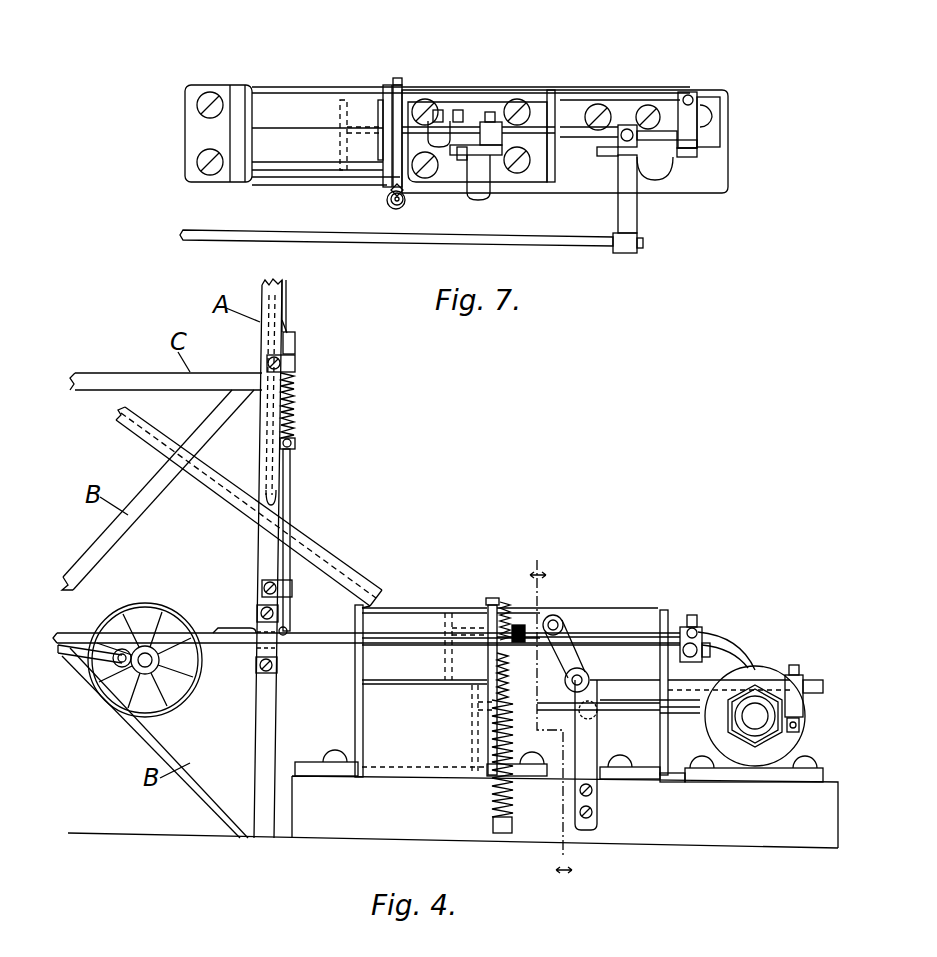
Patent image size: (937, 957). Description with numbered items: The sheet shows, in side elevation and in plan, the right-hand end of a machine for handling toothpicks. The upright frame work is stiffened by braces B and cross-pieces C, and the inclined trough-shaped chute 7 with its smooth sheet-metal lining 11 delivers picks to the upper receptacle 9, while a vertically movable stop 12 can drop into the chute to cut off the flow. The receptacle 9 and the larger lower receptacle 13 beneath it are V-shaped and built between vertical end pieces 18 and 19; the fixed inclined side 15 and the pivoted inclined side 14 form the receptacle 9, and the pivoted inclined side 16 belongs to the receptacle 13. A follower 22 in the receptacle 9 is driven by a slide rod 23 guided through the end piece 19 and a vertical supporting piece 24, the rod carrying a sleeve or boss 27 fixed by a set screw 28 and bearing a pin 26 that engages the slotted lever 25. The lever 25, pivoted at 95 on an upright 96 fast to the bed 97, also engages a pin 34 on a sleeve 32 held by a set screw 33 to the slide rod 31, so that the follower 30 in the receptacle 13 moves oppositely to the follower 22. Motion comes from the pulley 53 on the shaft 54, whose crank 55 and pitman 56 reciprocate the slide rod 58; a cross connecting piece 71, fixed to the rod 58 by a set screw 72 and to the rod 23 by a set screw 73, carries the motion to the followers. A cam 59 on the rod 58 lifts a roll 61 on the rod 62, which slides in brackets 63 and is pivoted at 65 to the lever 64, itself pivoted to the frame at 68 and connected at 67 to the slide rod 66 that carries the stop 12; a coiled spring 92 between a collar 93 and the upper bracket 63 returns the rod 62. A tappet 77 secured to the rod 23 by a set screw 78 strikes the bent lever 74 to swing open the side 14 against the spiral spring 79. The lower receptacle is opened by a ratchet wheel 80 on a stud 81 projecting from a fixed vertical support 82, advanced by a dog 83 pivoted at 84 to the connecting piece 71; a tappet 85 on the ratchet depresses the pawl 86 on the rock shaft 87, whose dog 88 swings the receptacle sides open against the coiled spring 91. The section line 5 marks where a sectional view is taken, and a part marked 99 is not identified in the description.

In FIG. 4, the section line 5 is at (551, 720).
In FIG. 4, the chute 7 is at (318, 550).
In FIG. 7, the receptacle 9 is at (286, 103).
In FIG. 4, the receptacle 9 is at (420, 608).
In FIG. 4, the lining 11 is at (360, 582).
In FIG. 4, the stop 12 is at (266, 492).
In FIG. 7, the lower receptacle 13 is at (290, 178).
In FIG. 4, the lower receptacle 13 is at (393, 677).
In FIG. 7, the inclined side 14 is at (272, 167).
In FIG. 4, the inclined side 14 is at (385, 620).
In FIG. 7, the inclined side 15 is at (335, 90).
In FIG. 7, the inclined side 16 is at (330, 180).
In FIG. 4, the inclined side 16 is at (375, 700).
In FIG. 7, the end piece 18 is at (248, 88).
In FIG. 4, the end piece 18 is at (354, 716).
In FIG. 7, the end piece 19 is at (399, 80).
In FIG. 4, the end piece 19 is at (493, 605).
In FIG. 7, the follower 22 is at (390, 100).
In FIG. 4, the follower 22 is at (452, 620).
In FIG. 7, the slide rod 23 is at (565, 137).
In FIG. 4, the slide rod 23 is at (618, 635).
In FIG. 7, the vertical supporting piece 24 is at (553, 92).
In FIG. 4, the vertical supporting piece 24 is at (668, 612).
In FIG. 7, the slotted lever 25 is at (470, 150).
In FIG. 4, the slotted lever 25 is at (560, 618).
In FIG. 7, the pin 26 is at (492, 158).
In FIG. 4, the pin 26 is at (514, 676).
In FIG. 7, the sleeve or boss 27 is at (497, 128).
In FIG. 4, the sleeve or boss 27 is at (565, 626).
In FIG. 7, the set screw 28 is at (492, 112).
In FIG. 7, the follower 30 is at (338, 147).
In FIG. 4, the follower 30 is at (470, 738).
In FIG. 7, the slide rod 31 is at (359, 143).
In FIG. 4, the slide rod 31 is at (630, 710).
In FIG. 7, the sleeve 32 is at (460, 110).
In FIG. 4, the sleeve 32 is at (650, 688).
In FIG. 7, the set screw 33 is at (458, 110).
In FIG. 4, the pin 34 is at (580, 705).
In FIG. 4, the pulley 53 is at (128, 608).
In FIG. 4, the shaft 54 is at (159, 660).
In FIG. 4, the crank 55 is at (118, 668).
In FIG. 4, the pitman 56 is at (72, 660).
In FIG. 7, the slide rod 58 is at (352, 242).
In FIG. 4, the slide rod 58 is at (183, 632).
In FIG. 4, the cam 59 is at (242, 628).
In FIG. 4, the roll 61 is at (288, 631).
In FIG. 4, the vertically movable rod 62 is at (290, 468).
In FIG. 4, the brackets 63 is at (297, 365).
In FIG. 4, the lever 64 is at (290, 312).
In FIG. 4, the pivot 65 is at (300, 340).
In FIG. 4, the vertical slide rod 66 is at (264, 428).
In FIG. 4, the pivot 67 is at (266, 293).
In FIG. 4, the frame 68 is at (292, 320).
In FIG. 7, the cross connecting piece 71 is at (637, 215).
In FIG. 4, the cross connecting piece 71 is at (729, 669).
In FIG. 4, the set screw 72 is at (685, 655).
In FIG. 4, the set screw 73 is at (697, 615).
In FIG. 7, the bent lever 74 is at (400, 204).
In FIG. 4, the bent lever 74 is at (508, 605).
In FIG. 7, the tappet 77 is at (423, 138).
In FIG. 4, the tappet 77 is at (522, 626).
In FIG. 7, the set screw 78 is at (437, 110).
In FIG. 7, the spiral spring 79 is at (392, 193).
In FIG. 4, the spiral spring 79 is at (498, 660).
In FIG. 7, the ratchet wheel 80 is at (697, 153).
In FIG. 4, the ratchet wheel 80 is at (772, 670).
In FIG. 4, the horizontal stud 81 is at (752, 718).
In FIG. 7, the fixed vertical support 82 is at (625, 115).
In FIG. 4, the fixed vertical support 82 is at (778, 768).
In FIG. 7, the dog or pawl 83 is at (660, 142).
In FIG. 4, the dog or pawl 83 is at (750, 642).
In FIG. 7, the pivot 84 is at (610, 157).
In FIG. 4, the pivot 84 is at (700, 632).
In FIG. 7, the tappet 85 is at (697, 144).
In FIG. 4, the tappet 85 is at (800, 724).
In FIG. 7, the pawl 86 is at (690, 93).
In FIG. 4, the pawl 86 is at (800, 674).
In FIG. 7, the rock shaft 87 is at (712, 100).
In FIG. 4, the rock shaft 87 is at (815, 688).
In FIG. 7, the dog 88 is at (395, 118).
In FIG. 7, the coiled spring 91 is at (390, 206).
In FIG. 4, the coiled spring 91 is at (512, 795).
In FIG. 4, the coiled spring 92 is at (298, 400).
In FIG. 4, the collar 93 is at (298, 446).
In FIG. 4, the pivot 95 is at (586, 670).
In FIG. 7, the upright 96 is at (478, 188).
In FIG. 4, the upright 96 is at (600, 797).
In FIG. 4, the bed 97 is at (750, 830).
In FIG. 4, the pedestal 99 is at (375, 815).
In FIG. 4, the braces B is at (158, 614).
In FIG. 4, the cross-pieces C is at (166, 381).